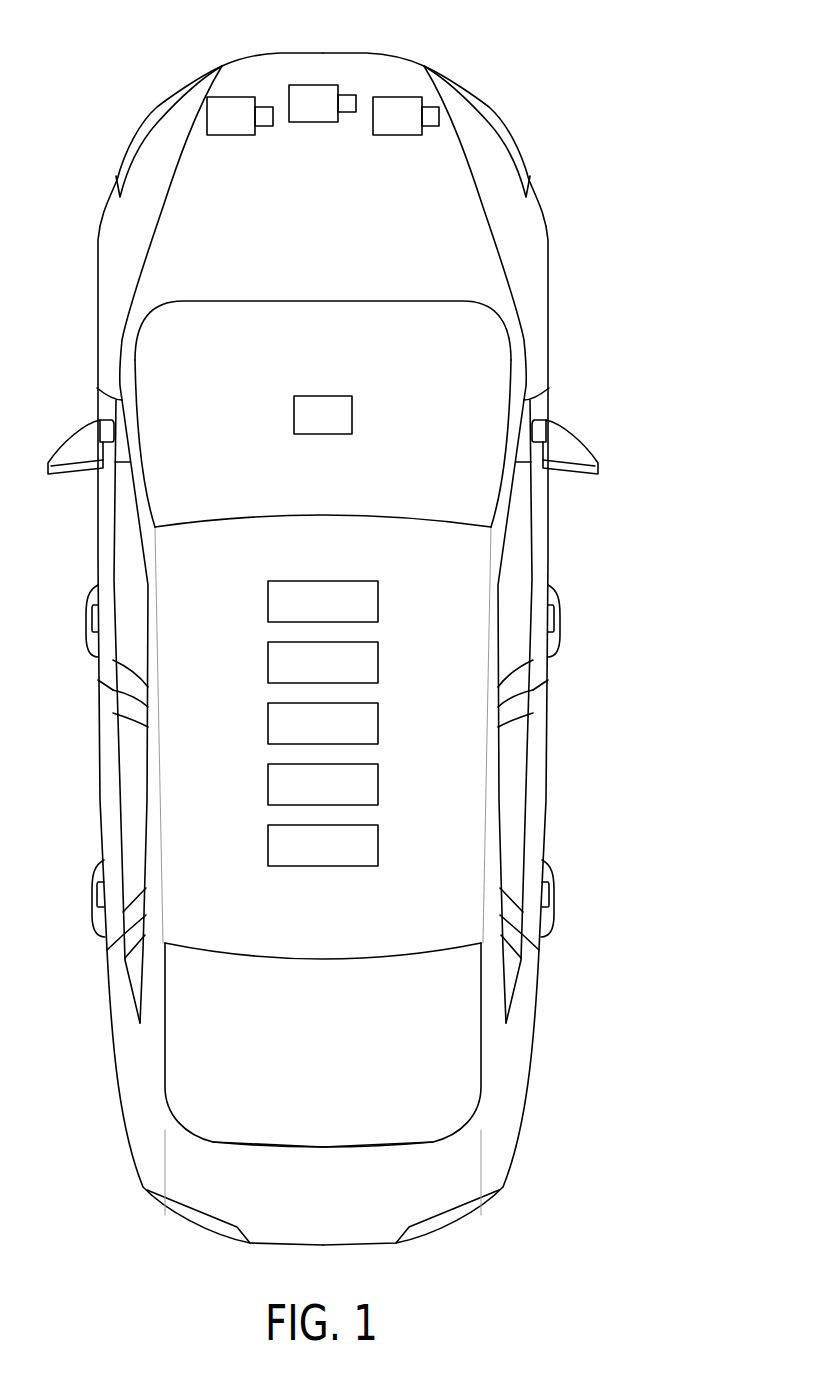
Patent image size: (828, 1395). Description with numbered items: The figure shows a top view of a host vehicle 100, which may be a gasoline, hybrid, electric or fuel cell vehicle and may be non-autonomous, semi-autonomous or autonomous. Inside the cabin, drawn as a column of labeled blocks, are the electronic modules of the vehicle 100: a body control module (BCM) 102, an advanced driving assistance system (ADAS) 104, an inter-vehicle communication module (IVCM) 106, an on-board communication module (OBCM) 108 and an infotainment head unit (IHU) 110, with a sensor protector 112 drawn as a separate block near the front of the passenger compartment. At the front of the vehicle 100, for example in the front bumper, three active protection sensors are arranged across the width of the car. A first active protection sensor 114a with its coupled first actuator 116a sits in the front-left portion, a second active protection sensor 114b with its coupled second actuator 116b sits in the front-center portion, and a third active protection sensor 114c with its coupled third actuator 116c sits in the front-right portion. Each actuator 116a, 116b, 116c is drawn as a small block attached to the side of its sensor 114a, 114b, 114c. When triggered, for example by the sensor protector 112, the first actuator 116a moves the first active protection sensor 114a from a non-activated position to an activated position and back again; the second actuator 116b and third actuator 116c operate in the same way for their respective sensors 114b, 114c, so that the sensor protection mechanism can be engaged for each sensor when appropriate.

The vehicle 100 is at (609, 1003).
The body control module (BCM) 102 is at (378, 601).
The advanced driving assistance system (ADAS) 104 is at (378, 662).
The inter-vehicle communication module (IVCM) 106 is at (378, 723).
The on-board communication module (OBCM) 108 is at (378, 784).
The infotainment head unit (IHU) 110 is at (378, 845).
The sensor protector 112 is at (323, 415).
The first active protection sensor 114a is at (232, 97).
The second active protection sensor 114b is at (312, 85).
The third active protection sensor 114c is at (397, 97).
The first actuator 116a is at (265, 126).
The second actuator 116b is at (347, 112).
The third actuator 116c is at (432, 126).